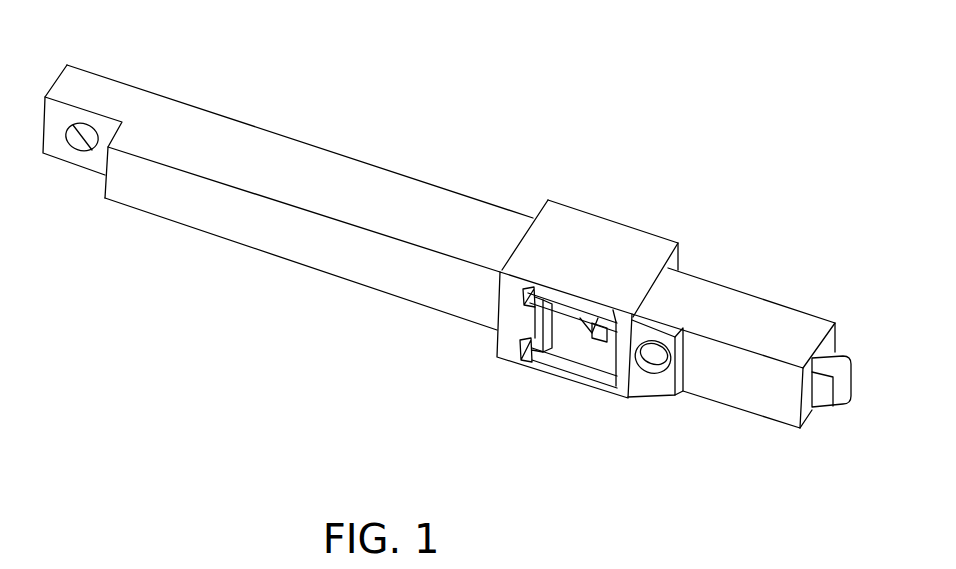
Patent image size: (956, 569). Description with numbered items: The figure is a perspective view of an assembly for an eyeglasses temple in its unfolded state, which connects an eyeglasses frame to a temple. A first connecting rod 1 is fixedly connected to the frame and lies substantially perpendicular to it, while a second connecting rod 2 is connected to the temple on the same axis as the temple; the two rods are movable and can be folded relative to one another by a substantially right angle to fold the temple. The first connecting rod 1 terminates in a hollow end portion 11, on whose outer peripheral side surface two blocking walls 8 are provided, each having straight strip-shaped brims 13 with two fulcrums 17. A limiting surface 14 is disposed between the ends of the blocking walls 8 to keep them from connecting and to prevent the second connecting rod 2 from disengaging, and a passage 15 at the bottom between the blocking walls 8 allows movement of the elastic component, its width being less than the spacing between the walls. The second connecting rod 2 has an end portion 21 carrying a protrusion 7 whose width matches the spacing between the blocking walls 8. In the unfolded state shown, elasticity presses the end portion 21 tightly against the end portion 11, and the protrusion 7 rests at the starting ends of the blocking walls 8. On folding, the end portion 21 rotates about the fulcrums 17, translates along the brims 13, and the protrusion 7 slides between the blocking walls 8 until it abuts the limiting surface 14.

The first connecting rod 1 is at (768, 330).
The second connecting rod 2 is at (393, 215).
The protrusion 7 is at (538, 325).
The blocking walls 8 is at (590, 330).
The end portion 11 is at (632, 252).
The brims 13 is at (565, 304).
The limiting surface 14 is at (613, 310).
The passage 15 is at (637, 392).
The fulcrums 17 is at (528, 356).
The end portion 21 is at (522, 296).